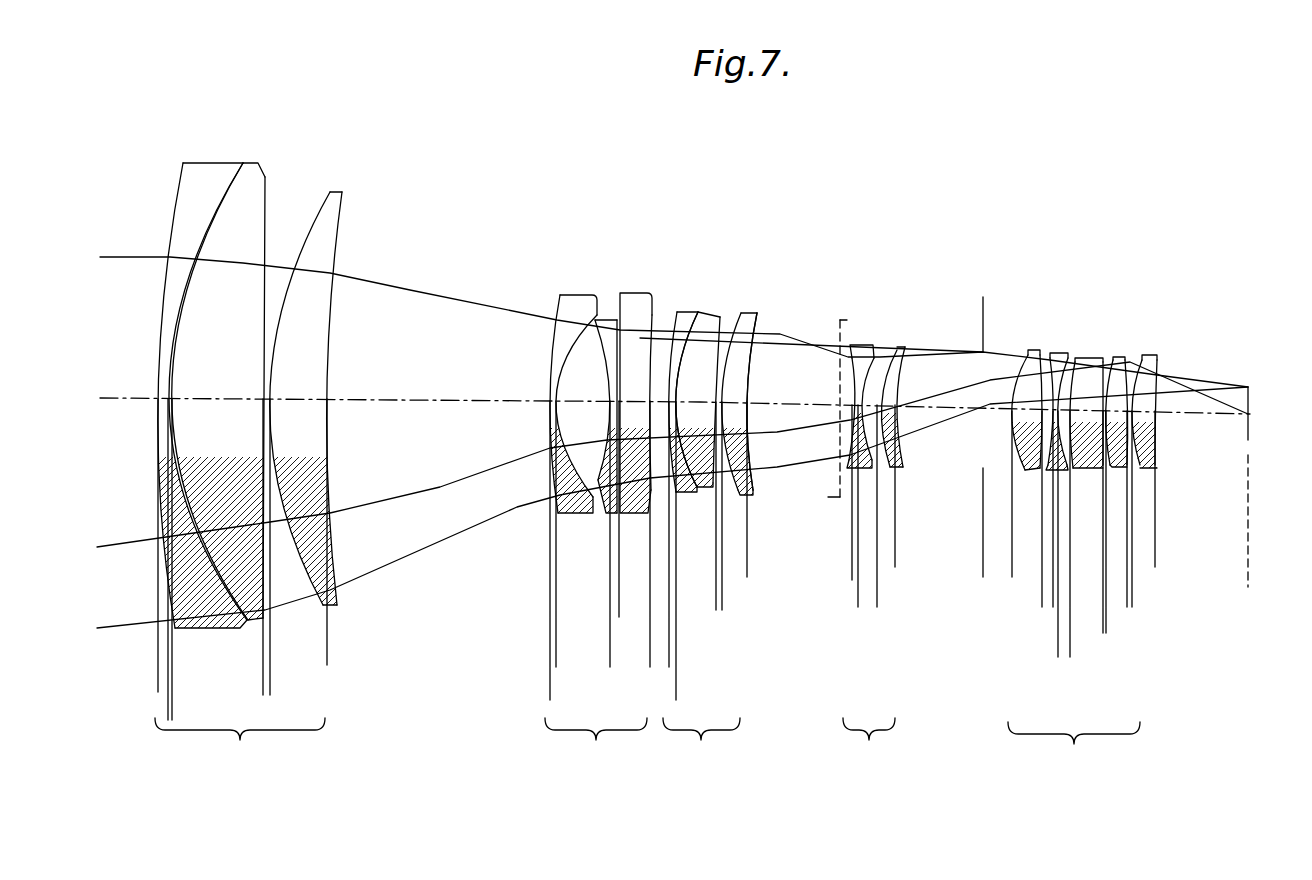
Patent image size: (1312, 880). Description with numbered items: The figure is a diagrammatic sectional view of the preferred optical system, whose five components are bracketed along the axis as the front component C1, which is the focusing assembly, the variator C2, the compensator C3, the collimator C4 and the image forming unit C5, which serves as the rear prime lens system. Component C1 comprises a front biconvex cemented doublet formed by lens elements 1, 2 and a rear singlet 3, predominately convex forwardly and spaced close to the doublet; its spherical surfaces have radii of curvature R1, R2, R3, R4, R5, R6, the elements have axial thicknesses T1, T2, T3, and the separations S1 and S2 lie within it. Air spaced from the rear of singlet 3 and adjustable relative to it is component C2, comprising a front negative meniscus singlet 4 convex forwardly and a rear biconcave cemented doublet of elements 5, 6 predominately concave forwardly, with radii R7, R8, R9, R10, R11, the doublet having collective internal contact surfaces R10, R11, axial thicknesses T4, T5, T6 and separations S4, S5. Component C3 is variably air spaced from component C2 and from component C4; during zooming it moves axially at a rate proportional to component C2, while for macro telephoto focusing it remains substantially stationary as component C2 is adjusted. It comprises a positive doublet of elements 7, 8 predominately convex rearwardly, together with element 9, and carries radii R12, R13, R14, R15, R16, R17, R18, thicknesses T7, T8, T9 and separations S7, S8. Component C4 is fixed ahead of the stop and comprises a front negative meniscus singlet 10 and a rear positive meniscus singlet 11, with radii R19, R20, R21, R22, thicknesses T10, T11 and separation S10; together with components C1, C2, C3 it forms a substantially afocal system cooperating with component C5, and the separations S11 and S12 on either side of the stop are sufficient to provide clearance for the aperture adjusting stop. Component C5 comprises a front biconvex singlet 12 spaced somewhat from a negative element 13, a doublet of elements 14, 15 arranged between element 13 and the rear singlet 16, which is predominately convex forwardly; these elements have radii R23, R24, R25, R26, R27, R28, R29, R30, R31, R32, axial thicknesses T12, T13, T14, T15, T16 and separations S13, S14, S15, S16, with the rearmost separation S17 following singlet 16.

The front doublet lens element 1 is at (201, 378).
The front doublet lens element 2 is at (230, 374).
The rear singlet 3 is at (324, 367).
The front negative meniscus singlet 4 is at (531, 382).
The rear biconcave doublet element 5 is at (584, 382).
The rear biconcave doublet element 6 is at (631, 382).
The positive doublet element 7 is at (670, 372).
The positive doublet element 8 is at (719, 369).
The lens element 9 is at (789, 373).
The front negative meniscus singlet 10 is at (846, 381).
The rear positive meniscus singlet 11 is at (914, 380).
The front biconvex singlet 12 is at (1020, 384).
The negative element 13 is at (1075, 384).
The doublet element 14 is at (1116, 383).
The doublet element 15 is at (1163, 382).
The rear singlet 16 is at (1202, 383).
The spherical surface radius of curvature R1 is at (178, 176).
The spherical surface radius of curvature R2 is at (229, 213).
The spherical surface radius of curvature R3 is at (241, 176).
The spherical surface radius of curvature R4 is at (268, 180).
The spherical surface radius of curvature R5 is at (322, 200).
The spherical surface radius of curvature R6 is at (346, 225).
The spherical surface radius of curvature R7 is at (555, 318).
The spherical surface radius of curvature R8 is at (575, 348).
The spherical surface radius of curvature R9 is at (593, 325).
The collective internal contact surface R10 is at (622, 350).
The collective internal contact surface R11 is at (648, 314).
The spherical surface radius of curvature R12 is at (667, 316).
The spherical surface radius of curvature R13 is at (679, 316).
The spherical surface radius of curvature R14 is at (698, 316).
The spherical surface radius of curvature R15 is at (716, 318).
The spherical surface radius of curvature R16 is at (744, 316).
The spherical surface radius of curvature R17 is at (758, 320).
The spherical surface radius of curvature R18 is at (762, 326).
The spherical surface radius of curvature R19 is at (849, 361).
The spherical surface radius of curvature R20 is at (874, 360).
The spherical surface radius of curvature R21 is at (888, 356).
The spherical surface radius of curvature R22 is at (907, 356).
The spherical surface radius of curvature R23 is at (1017, 366).
The spherical surface radius of curvature R24 is at (1040, 353).
The spherical surface radius of curvature R25 is at (1051, 367).
The spherical surface radius of curvature R26 is at (1069, 366).
The spherical surface radius of curvature R27 is at (1074, 364).
The spherical surface radius of curvature R28 is at (1105, 378).
The spherical surface radius of curvature R29 is at (1116, 362).
The spherical surface radius of curvature R30 is at (1129, 364).
The spherical surface radius of curvature R31 is at (1145, 358).
The spherical surface radius of curvature R32 is at (1160, 362).
The axial thickness T1 is at (140, 682).
The axial thickness T2 is at (263, 655).
The axial thickness T3 is at (327, 655).
The axial thickness T4 is at (532, 687).
The axial thickness T5 is at (592, 541).
The axial thickness T6 is at (668, 572).
The axial thickness T7 is at (651, 625).
The axial thickness T8 is at (716, 572).
The axial thickness T9 is at (747, 572).
The axial thickness T10 is at (876, 532).
The axial thickness T11 is at (859, 561).
The axial thickness T12 is at (1060, 533).
The axial thickness T13 is at (1035, 563).
The axial thickness T14 is at (1103, 533).
The axial thickness T15 is at (1127, 533).
The axial thickness T16 is at (1114, 563).
The axial separation S1 is at (150, 710).
The axial separation S2 is at (245, 682).
The axial separation S4 is at (610, 657).
The axial separation S5 is at (592, 610).
The axial separation S7 is at (651, 687).
The axial separation S8 is at (698, 598).
The axial separation S10 is at (840, 594).
The axial separation S11 is at (983, 532).
The axial separation S12 is at (1030, 563).
The axial separation S13 is at (1024, 594).
The axial separation S14 is at (1040, 648).
The axial separation S15 is at (1085, 625).
The axial separation S16 is at (1109, 594).
The axial separation S17 is at (1248, 563).
The focusing assembly C1 is at (240, 742).
The variator C2 is at (596, 742).
The compensator C3 is at (701, 742).
The collimator C4 is at (869, 742).
The image forming unit C5 is at (1074, 748).